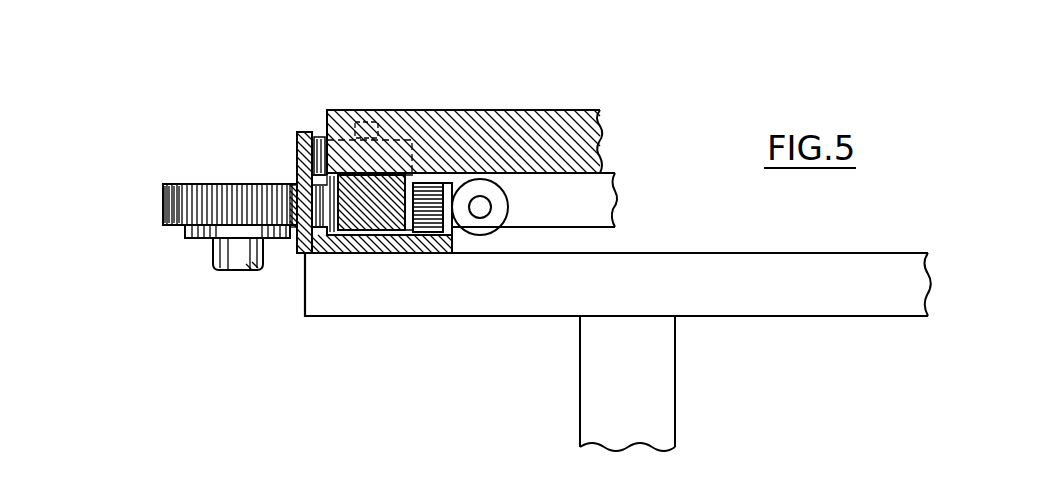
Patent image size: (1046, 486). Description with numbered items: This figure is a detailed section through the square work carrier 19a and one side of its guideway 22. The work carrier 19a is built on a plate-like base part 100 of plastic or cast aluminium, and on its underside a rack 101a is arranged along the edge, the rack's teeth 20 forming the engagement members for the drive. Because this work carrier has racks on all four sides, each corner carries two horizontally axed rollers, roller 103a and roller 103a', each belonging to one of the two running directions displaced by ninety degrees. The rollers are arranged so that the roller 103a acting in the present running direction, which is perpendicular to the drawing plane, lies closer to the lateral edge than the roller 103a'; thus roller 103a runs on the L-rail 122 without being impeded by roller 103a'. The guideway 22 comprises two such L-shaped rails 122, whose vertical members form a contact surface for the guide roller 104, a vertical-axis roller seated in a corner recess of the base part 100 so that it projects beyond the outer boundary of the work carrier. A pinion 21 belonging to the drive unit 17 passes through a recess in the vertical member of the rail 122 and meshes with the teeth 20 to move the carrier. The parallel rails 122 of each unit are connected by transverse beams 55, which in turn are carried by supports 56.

The drive unit 17 is at (232, 277).
The work carrier 19a is at (600, 97).
The teeth 20 is at (341, 256).
The pinion 21 is at (238, 184).
The guideway 22 is at (679, 230).
The transverse beam 55 is at (525, 308).
The support 56 is at (664, 352).
The base part 100 is at (455, 122).
The rack 101a is at (386, 218).
The roller 103a is at (466, 232).
The roller 103a' is at (523, 207).
The guide roller 104 is at (322, 137).
The L-rail 122 is at (322, 256).